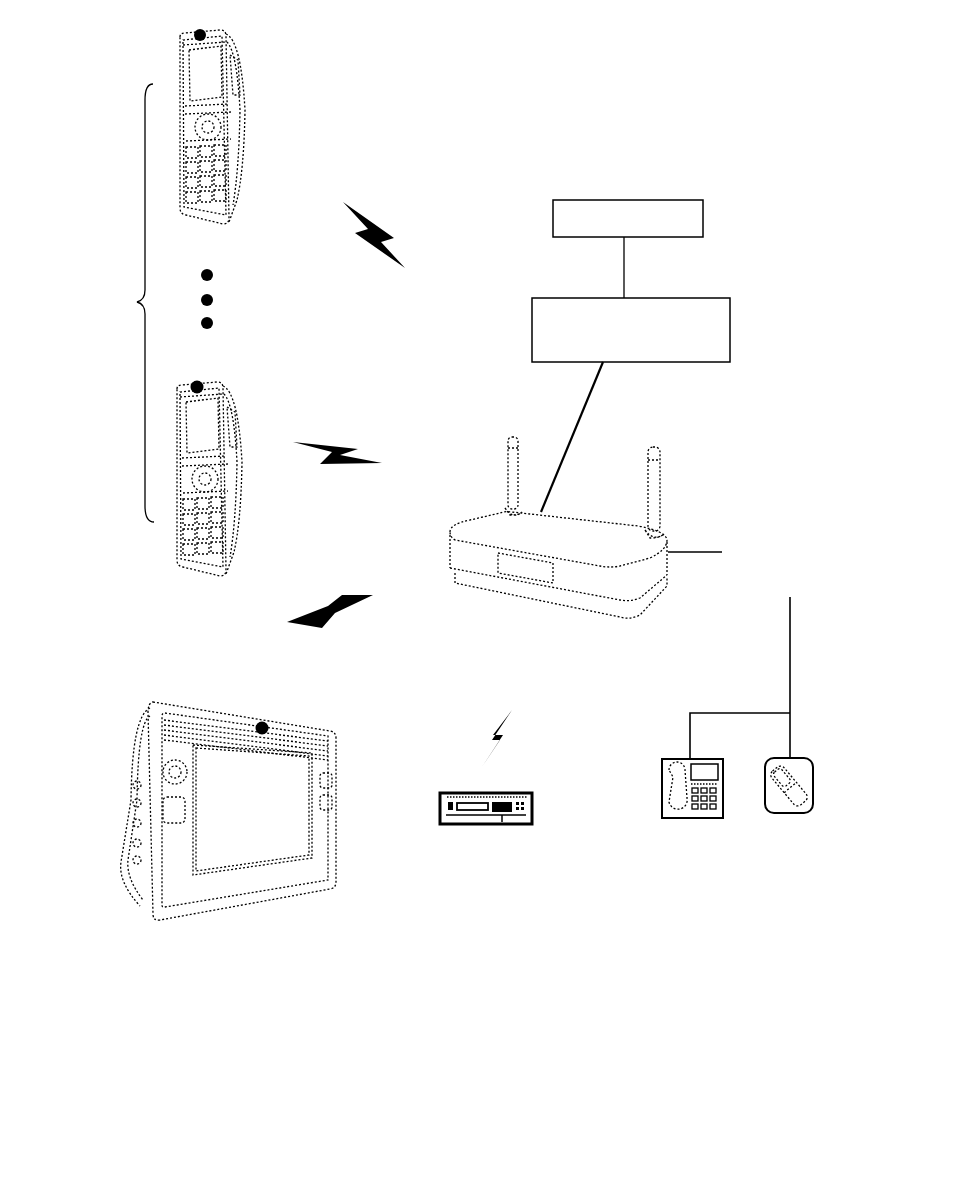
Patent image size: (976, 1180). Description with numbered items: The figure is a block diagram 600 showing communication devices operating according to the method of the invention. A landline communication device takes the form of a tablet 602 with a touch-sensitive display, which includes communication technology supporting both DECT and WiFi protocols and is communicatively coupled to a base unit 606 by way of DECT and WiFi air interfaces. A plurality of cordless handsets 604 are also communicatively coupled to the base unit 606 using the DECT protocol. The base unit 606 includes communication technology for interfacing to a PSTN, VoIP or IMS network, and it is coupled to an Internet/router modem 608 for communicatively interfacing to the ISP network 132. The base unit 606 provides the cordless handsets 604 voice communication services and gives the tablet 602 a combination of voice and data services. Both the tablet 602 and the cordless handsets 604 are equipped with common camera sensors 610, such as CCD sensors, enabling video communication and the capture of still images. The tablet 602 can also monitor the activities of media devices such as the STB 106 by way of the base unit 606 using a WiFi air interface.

The block diagram 600 is at (762, 982).
The tablet 602 is at (153, 700).
The cordless handsets 604 is at (232, 406).
The base unit 606 is at (618, 616).
The Internet/router modem 608 is at (714, 353).
The camera sensors 610 is at (199, 385).
The STB 106 is at (512, 826).
The ISP network 132 is at (686, 231).